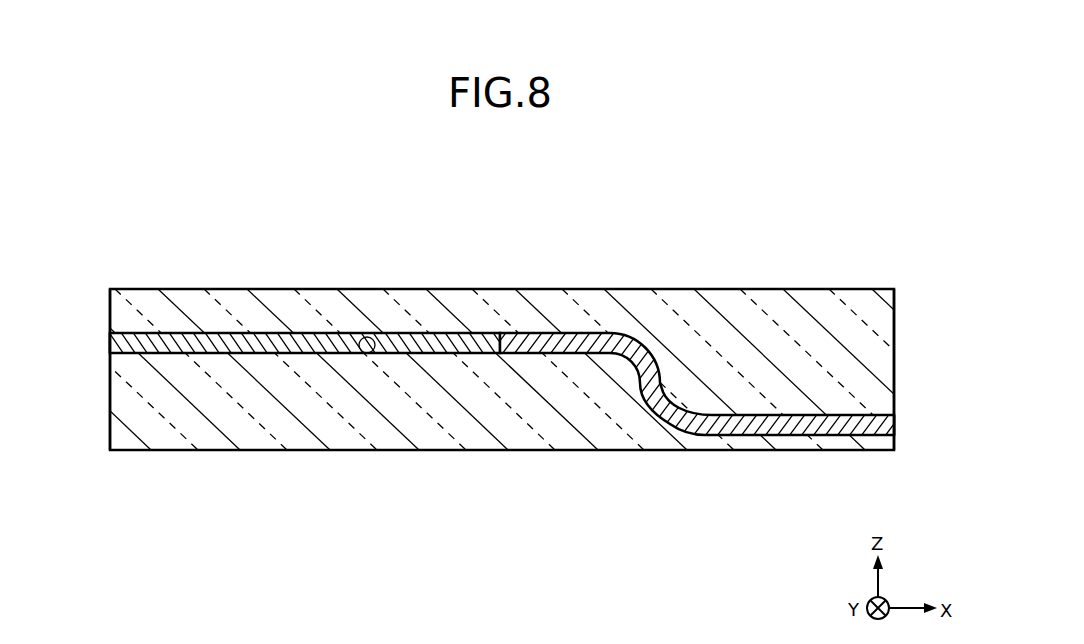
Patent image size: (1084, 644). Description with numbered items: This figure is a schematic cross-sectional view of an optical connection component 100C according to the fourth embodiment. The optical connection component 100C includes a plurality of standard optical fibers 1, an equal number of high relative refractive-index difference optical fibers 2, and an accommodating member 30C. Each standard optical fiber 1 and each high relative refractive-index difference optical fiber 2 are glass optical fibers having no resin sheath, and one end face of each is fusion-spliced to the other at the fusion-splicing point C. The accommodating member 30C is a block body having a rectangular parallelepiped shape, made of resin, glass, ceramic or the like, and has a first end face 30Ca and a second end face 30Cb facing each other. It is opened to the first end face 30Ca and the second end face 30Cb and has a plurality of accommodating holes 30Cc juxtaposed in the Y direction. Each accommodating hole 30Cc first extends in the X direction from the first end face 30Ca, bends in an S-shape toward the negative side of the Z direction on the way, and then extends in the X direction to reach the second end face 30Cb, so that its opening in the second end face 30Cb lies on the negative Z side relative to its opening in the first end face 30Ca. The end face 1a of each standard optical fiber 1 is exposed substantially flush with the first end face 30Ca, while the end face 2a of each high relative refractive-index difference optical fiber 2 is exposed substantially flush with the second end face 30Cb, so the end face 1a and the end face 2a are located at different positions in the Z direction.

The optical connection component 100C is at (521, 348).
The accommodating member 30C is at (500, 289).
The first end face 30Ca is at (110, 436).
The second end face 30Cb is at (894, 322).
The accommodating hole 30Cc is at (370, 352).
The standard optical fiber 1 is at (303, 333).
The end face of standard optical fiber 1a is at (110, 343).
The high relative refractive-index difference optical fiber 2 is at (584, 333).
The end face of high relative refractive-index difference optical fiber 2a is at (895, 423).
The fusion-splicing point C is at (500, 365).